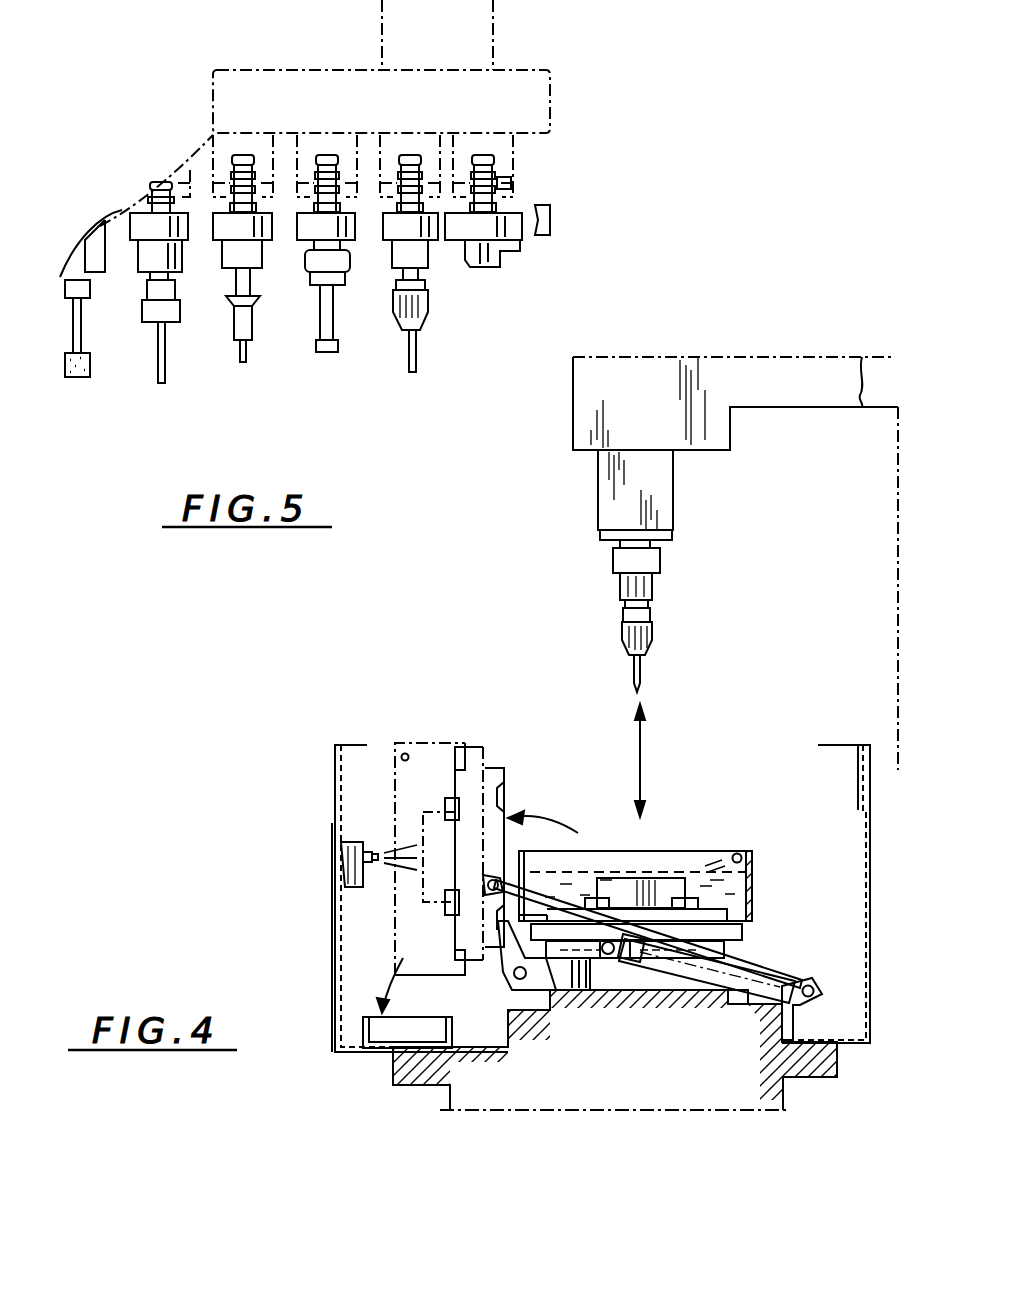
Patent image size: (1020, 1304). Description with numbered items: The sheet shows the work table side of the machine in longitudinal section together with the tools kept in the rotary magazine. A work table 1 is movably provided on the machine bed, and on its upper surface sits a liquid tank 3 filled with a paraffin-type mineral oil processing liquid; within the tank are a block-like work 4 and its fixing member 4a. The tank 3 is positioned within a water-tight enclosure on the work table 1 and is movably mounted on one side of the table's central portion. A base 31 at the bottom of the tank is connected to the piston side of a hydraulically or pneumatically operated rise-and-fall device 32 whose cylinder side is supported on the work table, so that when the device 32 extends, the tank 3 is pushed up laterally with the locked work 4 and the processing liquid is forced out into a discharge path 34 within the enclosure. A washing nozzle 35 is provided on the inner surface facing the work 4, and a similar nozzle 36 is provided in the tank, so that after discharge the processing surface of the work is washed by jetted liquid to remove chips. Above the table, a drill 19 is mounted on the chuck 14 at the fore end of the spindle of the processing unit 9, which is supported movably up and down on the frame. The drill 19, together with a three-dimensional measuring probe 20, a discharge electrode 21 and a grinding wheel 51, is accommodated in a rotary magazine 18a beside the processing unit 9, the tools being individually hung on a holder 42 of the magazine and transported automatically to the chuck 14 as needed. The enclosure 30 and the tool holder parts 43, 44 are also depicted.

In FIG. 4, the work table 1 is at (620, 1073).
In FIG. 4, the liquid tank 3 is at (425, 740).
In FIG. 4, the work 4 is at (668, 880).
In FIG. 4, the fixing member 4a is at (695, 905).
In FIG. 4, the processing unit 9 is at (590, 397).
In FIG. 4, the chuck 14 is at (608, 500).
In FIG. 5, the rotary magazine 18a is at (298, 70).
In FIG. 5, the drill 19 is at (420, 352).
In FIG. 4, the drill 19 is at (645, 665).
In FIG. 5, the three-dimensional measuring probe 20 is at (248, 362).
In FIG. 5, the discharge electrode 21 is at (345, 355).
In FIG. 4, the housing 30 is at (335, 945).
In FIG. 4, the base 31 is at (478, 750).
In FIG. 4, the rise-and-fall device 32 is at (753, 1000).
In FIG. 4, the discharge path 34 is at (388, 1032).
In FIG. 4, the washing nozzle 35 is at (340, 856).
In FIG. 4, the nozzle 36 is at (740, 848).
In FIG. 5, the holder 42 is at (511, 183).
In FIG. 5, the tool holder 43 is at (150, 225).
In FIG. 5, the pull stud 44 is at (242, 155).
In FIG. 5, the grinding wheel 51 is at (82, 378).